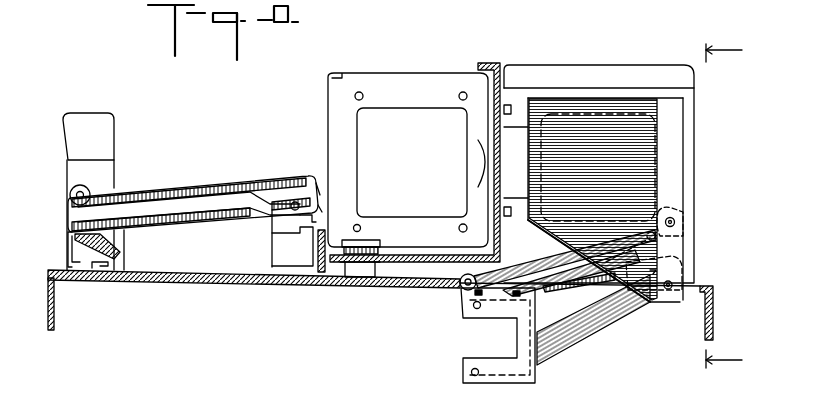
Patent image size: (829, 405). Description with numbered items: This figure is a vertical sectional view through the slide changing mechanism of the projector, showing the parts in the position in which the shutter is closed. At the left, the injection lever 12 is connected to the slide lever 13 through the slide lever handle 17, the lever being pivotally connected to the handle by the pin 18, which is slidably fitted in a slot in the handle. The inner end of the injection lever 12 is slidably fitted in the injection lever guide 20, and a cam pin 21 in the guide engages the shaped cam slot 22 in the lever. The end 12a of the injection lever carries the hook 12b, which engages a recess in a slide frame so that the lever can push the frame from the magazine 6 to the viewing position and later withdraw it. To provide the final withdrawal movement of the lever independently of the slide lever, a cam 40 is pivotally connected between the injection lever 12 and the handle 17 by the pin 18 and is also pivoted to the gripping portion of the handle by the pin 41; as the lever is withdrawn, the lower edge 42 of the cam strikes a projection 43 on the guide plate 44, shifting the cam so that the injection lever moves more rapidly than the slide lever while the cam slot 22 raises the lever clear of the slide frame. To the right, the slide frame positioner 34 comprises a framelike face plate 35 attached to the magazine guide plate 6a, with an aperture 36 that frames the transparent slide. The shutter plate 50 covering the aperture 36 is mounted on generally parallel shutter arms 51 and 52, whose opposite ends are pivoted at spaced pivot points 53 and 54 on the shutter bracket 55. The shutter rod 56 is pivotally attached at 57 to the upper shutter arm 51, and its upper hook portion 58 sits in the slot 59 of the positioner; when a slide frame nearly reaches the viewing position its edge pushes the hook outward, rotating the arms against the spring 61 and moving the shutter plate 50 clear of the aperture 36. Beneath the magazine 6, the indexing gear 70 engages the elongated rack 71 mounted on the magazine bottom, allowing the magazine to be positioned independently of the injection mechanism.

The magazine 6 is at (422, 76).
The magazine guide plate 6a is at (498, 63).
The injection lever 12 is at (194, 190).
The end of injection lever 12a is at (318, 194).
The hook 12b is at (320, 211).
The slide lever 13 is at (713, 206).
The slide lever handle 17 is at (60, 179).
The pin 18 is at (74, 195).
The injection lever guide 20 is at (270, 228).
The cam pin 21 is at (297, 184).
The cam slot 22 is at (160, 199).
The slide frame positioner 34 is at (626, 68).
The face plate 35 is at (697, 130).
The aperture 36 is at (580, 112).
The cam 40 is at (72, 252).
The pin 41 is at (68, 238).
The lower edge of cam 42 is at (118, 257).
The projection 43 is at (103, 270).
The guide plate 44 is at (172, 271).
The shutter plate 50 is at (675, 177).
The upper shutter arm 51 is at (580, 287).
The shutter arm 52 is at (598, 337).
The pivot point 53 is at (472, 306).
The pivot point 54 is at (471, 372).
The shutter bracket 55 is at (537, 330).
The shutter rod 56 is at (522, 268).
The pivotal attachment 57 is at (460, 286).
The hook portion 58 is at (670, 212).
The slot 59 is at (680, 236).
The spring 61 is at (603, 284).
The indexing gear 70 is at (378, 250).
The rack 71 is at (336, 246).